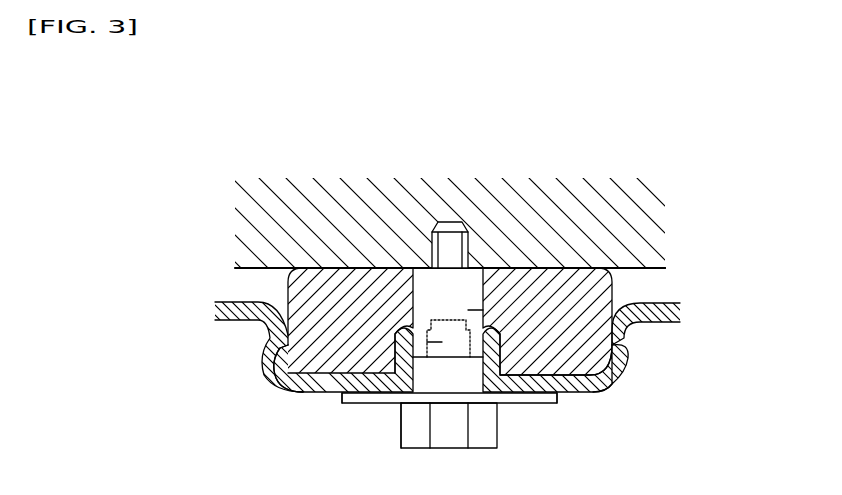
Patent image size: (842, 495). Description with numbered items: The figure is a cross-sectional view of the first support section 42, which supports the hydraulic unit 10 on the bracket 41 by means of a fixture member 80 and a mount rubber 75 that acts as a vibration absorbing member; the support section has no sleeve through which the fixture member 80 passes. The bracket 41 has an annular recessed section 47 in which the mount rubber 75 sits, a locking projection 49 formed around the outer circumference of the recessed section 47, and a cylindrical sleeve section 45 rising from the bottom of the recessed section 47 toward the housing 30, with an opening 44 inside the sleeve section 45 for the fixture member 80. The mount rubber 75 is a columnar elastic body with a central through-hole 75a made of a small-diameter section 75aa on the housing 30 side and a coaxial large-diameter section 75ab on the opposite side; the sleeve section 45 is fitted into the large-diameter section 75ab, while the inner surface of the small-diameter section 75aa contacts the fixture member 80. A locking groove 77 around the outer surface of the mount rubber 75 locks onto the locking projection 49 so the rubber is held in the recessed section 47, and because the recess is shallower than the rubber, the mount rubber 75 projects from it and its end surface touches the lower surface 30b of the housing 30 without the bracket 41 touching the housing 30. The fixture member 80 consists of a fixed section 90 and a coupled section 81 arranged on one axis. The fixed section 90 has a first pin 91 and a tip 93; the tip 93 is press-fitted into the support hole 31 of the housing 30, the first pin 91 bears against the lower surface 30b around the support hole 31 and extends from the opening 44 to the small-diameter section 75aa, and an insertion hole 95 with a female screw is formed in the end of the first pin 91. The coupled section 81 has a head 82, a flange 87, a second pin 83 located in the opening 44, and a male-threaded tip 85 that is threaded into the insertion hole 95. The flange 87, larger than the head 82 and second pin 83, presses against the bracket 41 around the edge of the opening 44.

The hydraulic unit 10 is at (487, 223).
The housing 30 is at (652, 240).
The lower surface 30b is at (612, 275).
The support hole 31 is at (433, 247).
The tip 93 is at (457, 246).
The insertion hole 95 is at (456, 328).
The mount rubber 75 is at (418, 239).
The through-hole 75a is at (448, 239).
The large-diameter section 75ab is at (413, 312).
The small-diameter section 75aa is at (419, 282).
The recessed section 47 is at (285, 378).
The locking projection 49 is at (342, 366).
The locking groove 77 is at (278, 333).
The bracket 41 is at (678, 305).
The fixed section 90 is at (492, 298).
The first pin 91 is at (612, 388).
The tip 85 is at (410, 355).
The opening 44 is at (478, 365).
The sleeve section 45 is at (527, 403).
The flange 87 is at (557, 398).
The first support section 42 is at (337, 412).
The fixture member 80 is at (456, 430).
The coupled section 81 is at (389, 425).
The head 82 is at (412, 440).
The second pin 83 is at (447, 375).